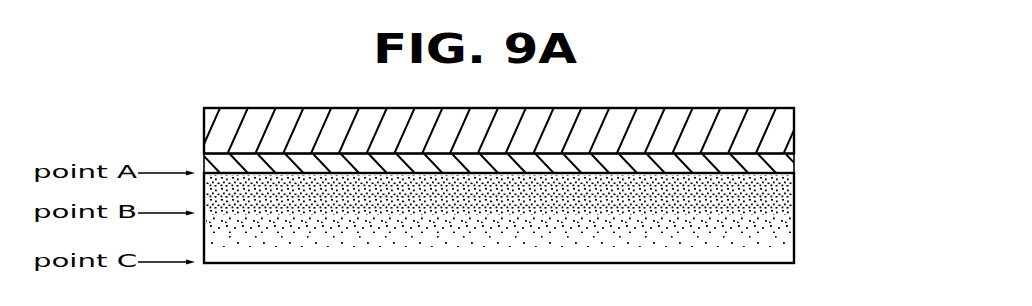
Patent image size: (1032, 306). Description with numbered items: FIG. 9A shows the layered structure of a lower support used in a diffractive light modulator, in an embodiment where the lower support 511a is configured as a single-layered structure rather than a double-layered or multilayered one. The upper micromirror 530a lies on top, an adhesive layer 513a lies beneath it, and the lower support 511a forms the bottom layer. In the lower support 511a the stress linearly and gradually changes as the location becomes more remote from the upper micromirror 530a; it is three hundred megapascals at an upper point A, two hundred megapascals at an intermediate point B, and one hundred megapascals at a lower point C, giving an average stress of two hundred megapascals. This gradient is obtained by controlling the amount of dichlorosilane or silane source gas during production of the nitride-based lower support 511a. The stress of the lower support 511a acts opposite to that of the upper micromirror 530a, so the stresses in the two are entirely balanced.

The upper micromirror 530a is at (795, 140).
The adhesive layer 513a is at (795, 165).
The lower support 511a is at (795, 202).